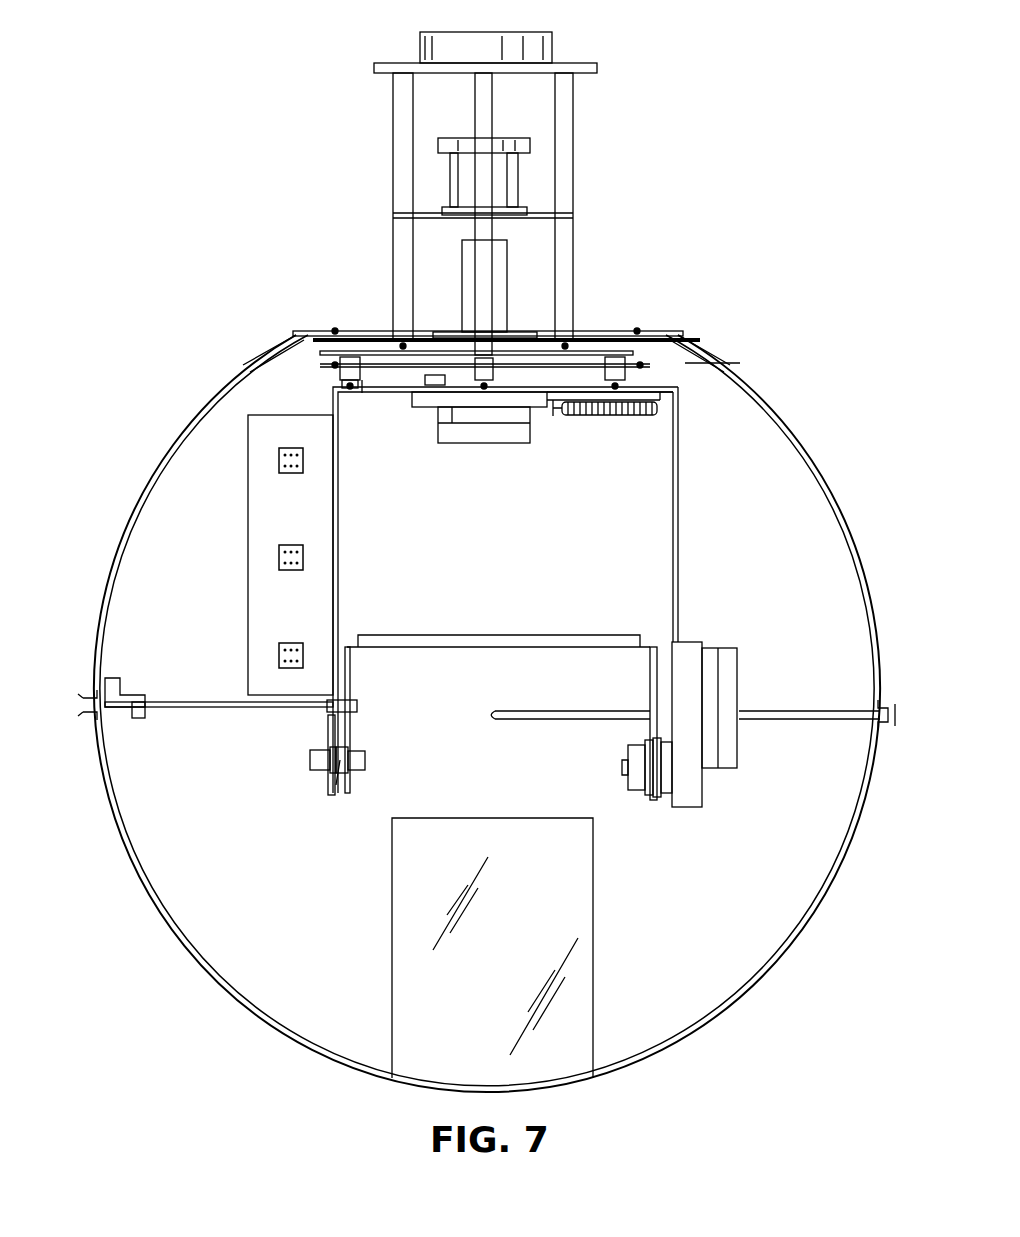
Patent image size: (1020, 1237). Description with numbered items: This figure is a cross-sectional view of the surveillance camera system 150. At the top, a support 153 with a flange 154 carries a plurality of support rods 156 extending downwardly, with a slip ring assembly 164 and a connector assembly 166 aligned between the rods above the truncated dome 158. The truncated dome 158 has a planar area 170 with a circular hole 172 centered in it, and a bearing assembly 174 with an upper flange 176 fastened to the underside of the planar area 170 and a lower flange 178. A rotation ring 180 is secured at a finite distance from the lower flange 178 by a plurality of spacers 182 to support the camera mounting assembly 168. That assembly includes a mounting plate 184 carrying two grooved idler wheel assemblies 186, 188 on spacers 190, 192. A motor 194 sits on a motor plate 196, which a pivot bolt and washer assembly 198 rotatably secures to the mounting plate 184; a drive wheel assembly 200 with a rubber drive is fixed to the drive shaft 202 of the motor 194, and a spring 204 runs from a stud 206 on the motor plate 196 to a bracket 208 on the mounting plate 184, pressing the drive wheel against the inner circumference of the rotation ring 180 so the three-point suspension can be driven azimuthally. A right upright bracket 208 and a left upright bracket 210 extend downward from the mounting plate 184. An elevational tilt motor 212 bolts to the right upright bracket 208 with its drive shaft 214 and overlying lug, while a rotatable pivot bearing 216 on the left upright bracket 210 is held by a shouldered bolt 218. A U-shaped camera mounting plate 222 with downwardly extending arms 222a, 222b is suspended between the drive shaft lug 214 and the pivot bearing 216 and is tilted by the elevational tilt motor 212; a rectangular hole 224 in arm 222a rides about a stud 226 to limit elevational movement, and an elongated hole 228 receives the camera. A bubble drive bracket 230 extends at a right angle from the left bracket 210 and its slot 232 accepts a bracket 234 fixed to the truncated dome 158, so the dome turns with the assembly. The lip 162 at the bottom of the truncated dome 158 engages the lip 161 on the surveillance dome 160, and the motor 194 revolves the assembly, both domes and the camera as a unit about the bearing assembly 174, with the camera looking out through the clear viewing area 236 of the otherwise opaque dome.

The surveillance camera system 150 is at (636, 240).
The support 153 is at (382, 173).
The flange 154 is at (583, 64).
The support rods 156 is at (566, 119).
The truncated dome 158 is at (209, 412).
The surveillance dome 160 is at (147, 909).
The lip 161 is at (96, 720).
The lip 162 is at (95, 696).
The slip ring assembly 164 is at (500, 294).
The connector assembly 166 is at (512, 177).
The camera mounting assembly 168 is at (696, 547).
The planar area 170 is at (652, 338).
The circular hole 172 is at (368, 333).
The bearing assembly 174 is at (578, 340).
The upper flange 176 is at (612, 344).
The lower flange 178 is at (690, 349).
The rotation ring 180 is at (692, 368).
The spacers 182 is at (306, 350).
The mounting plate 184 is at (389, 393).
The grooved idler wheel assembly 186 is at (326, 379).
The grooved idler wheel assembly 188 is at (650, 384).
The spacer 190 is at (349, 388).
The spacer 192 is at (596, 414).
The motor 194 is at (500, 441).
The motor plate 196 is at (421, 401).
The pivot bolt and washer assembly 198 is at (428, 342).
The drive wheel assembly 200 is at (516, 390).
The drive shaft 202 is at (475, 400).
The spring 204 is at (650, 414).
The stud 206 is at (558, 412).
The right upright bracket 208 is at (680, 496).
The left upright bracket 210 is at (340, 551).
The elevational tilt motor 212 is at (731, 673).
The drive shaft 214 is at (681, 773).
The rotatable pivot bearing 216 is at (349, 781).
The shouldered bolt 218 is at (367, 761).
The U-shaped camera mounting plate 222 is at (412, 637).
The downwardly extending arm 222a is at (352, 663).
The downwardly extending arm 222b is at (652, 681).
The rectangular hole 224 is at (366, 719).
The stud 226 is at (358, 722).
The elongated hole 228 is at (491, 644).
The bubble drive bracket 230 is at (258, 708).
The slot 232 is at (137, 716).
The bracket 234 is at (112, 678).
The clear viewing area 236 is at (598, 951).